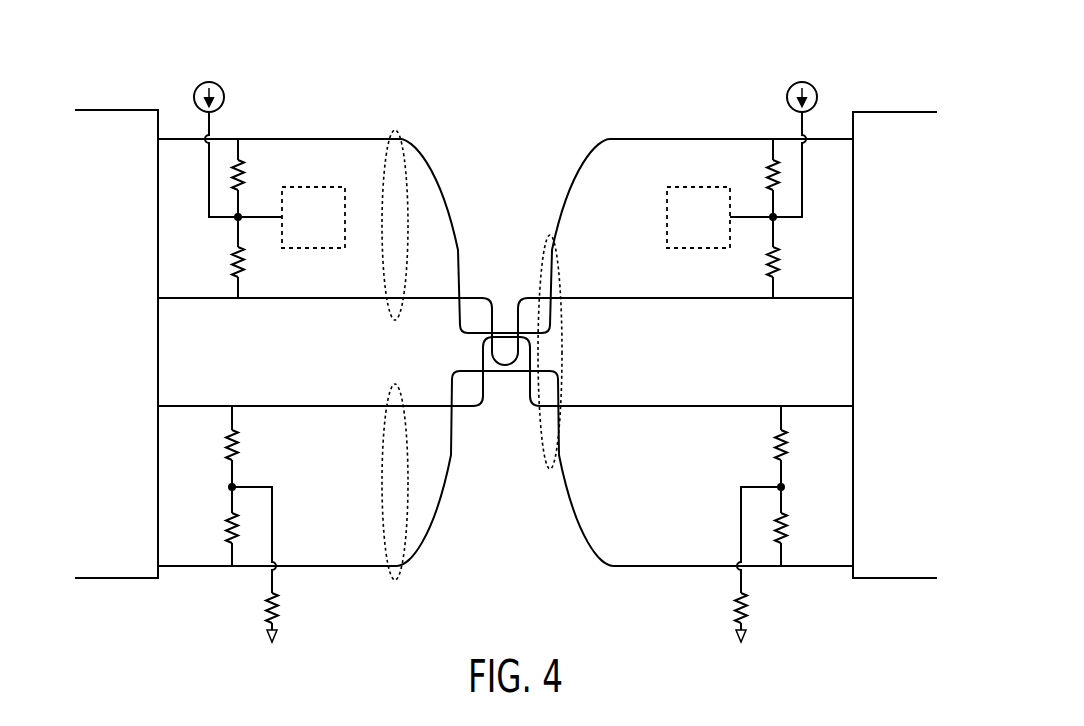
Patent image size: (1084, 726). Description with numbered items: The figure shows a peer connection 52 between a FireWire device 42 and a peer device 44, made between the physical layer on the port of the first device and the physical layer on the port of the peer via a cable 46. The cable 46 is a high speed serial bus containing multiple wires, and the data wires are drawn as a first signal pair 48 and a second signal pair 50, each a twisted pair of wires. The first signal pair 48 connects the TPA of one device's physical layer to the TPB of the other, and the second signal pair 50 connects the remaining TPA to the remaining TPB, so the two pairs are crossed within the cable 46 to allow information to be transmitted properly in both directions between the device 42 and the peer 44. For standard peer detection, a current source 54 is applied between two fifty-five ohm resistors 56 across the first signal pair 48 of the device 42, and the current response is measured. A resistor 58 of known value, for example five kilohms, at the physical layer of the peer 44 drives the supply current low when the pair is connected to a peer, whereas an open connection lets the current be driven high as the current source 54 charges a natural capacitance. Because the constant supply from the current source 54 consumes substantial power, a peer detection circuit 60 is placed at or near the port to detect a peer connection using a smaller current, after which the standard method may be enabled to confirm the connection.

The FireWire device 42 is at (121, 127).
The peer device 44 is at (888, 122).
The cable 46 is at (553, 474).
The first signal pair 48 is at (395, 128).
The second signal pair 50 is at (393, 581).
The peer connection 52 is at (626, 59).
The current source 54 is at (216, 83).
The 55 ohm resistors 56 is at (243, 183).
The resistor 58 is at (750, 602).
The peer detection circuit 60 is at (314, 249).